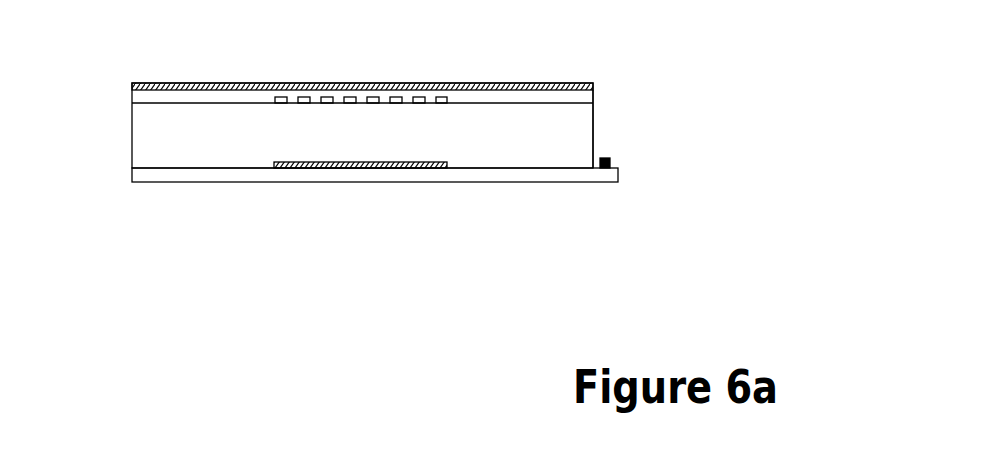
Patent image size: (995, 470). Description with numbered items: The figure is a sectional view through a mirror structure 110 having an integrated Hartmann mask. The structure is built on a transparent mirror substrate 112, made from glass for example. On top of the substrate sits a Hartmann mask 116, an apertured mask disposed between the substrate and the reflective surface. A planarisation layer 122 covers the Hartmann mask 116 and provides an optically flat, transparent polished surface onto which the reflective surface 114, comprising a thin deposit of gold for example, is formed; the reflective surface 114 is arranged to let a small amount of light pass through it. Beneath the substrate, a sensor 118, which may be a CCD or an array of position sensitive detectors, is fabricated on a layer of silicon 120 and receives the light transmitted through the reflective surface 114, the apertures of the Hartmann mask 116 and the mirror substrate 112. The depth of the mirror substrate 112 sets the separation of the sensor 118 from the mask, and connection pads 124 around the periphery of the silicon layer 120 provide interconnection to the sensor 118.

The mirror structure 110 is at (390, 196).
The transparent mirror substrate 112 is at (132, 137).
The reflective surface 114 is at (517, 83).
The Hartmann mask 116 is at (298, 98).
The sensor 118 is at (417, 164).
The layer of silicon 120 is at (250, 183).
The planarisation layer 122 is at (593, 95).
The connection pads 124 is at (608, 160).